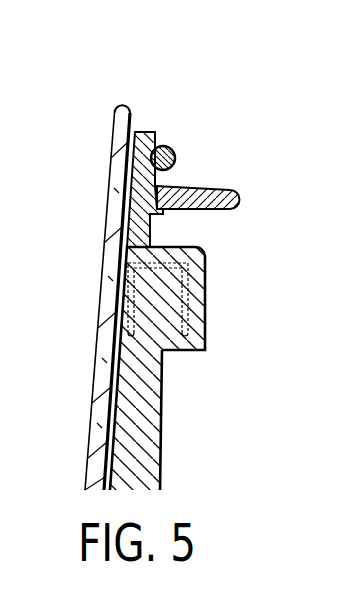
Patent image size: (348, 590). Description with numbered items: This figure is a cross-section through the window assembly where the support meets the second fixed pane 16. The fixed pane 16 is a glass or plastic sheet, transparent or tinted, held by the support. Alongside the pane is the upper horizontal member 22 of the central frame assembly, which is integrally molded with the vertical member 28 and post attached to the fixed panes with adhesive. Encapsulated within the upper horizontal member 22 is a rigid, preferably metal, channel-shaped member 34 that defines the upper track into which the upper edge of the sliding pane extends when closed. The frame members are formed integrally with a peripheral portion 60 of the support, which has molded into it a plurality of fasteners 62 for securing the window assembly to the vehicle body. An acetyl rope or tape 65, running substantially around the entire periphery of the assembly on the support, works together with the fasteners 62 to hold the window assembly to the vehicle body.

The second fixed pane 16 is at (95, 368).
The upper horizontal member 22 is at (205, 257).
The vertical member 28 is at (163, 425).
The channel-shaped member 34 is at (204, 297).
The peripheral portion 60 is at (151, 131).
The fastener 62 is at (204, 187).
The acetyl rope or tape 65 is at (171, 148).